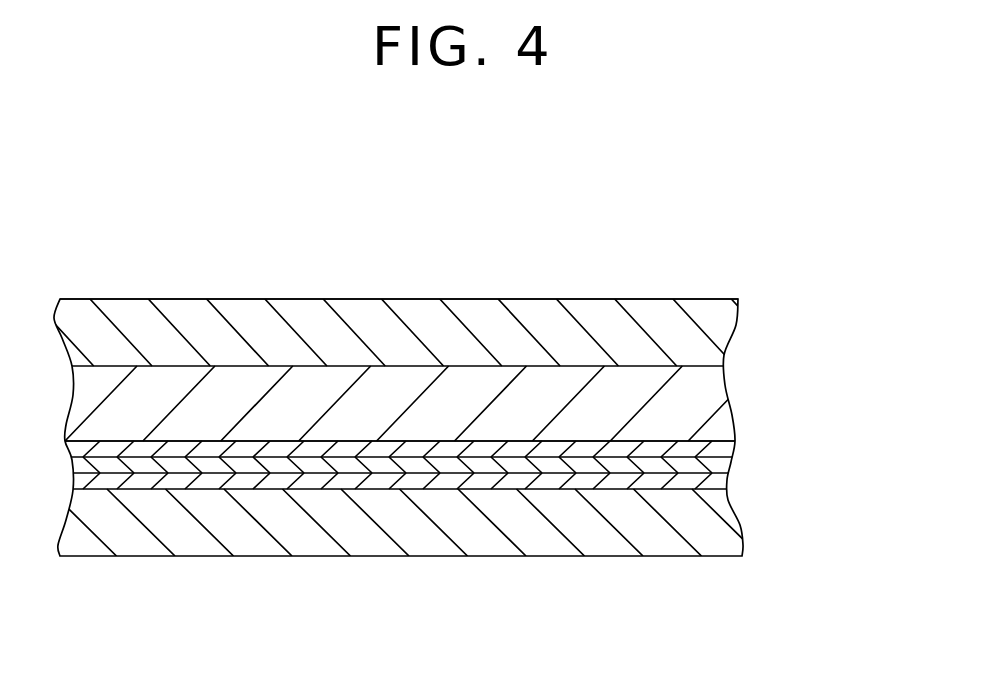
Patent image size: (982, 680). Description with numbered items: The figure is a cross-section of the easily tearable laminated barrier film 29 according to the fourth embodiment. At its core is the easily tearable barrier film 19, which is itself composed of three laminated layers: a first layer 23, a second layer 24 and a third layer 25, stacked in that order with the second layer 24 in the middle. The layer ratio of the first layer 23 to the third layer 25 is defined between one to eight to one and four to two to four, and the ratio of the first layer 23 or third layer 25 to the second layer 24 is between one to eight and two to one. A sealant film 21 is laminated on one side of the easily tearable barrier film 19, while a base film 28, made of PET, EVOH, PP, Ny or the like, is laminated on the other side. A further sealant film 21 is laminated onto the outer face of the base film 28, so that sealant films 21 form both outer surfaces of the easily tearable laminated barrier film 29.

The easily tearable laminated barrier film 29 is at (396, 299).
The sealant film 21 is at (560, 298).
The base film 28 is at (718, 386).
The easily tearable barrier film 19 is at (828, 395).
The first layer 23 is at (725, 446).
The second layer 24 is at (720, 463).
The third layer 25 is at (725, 480).